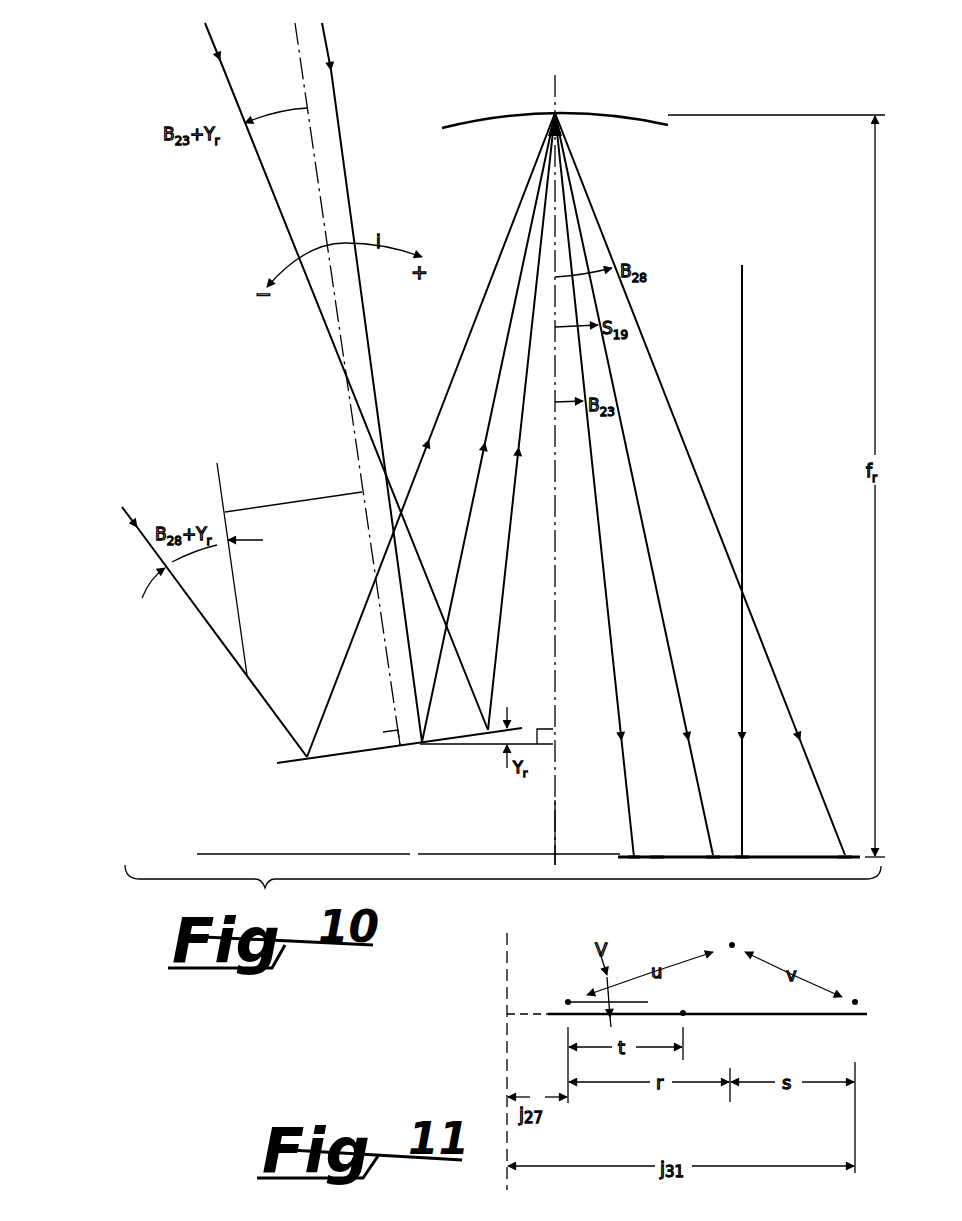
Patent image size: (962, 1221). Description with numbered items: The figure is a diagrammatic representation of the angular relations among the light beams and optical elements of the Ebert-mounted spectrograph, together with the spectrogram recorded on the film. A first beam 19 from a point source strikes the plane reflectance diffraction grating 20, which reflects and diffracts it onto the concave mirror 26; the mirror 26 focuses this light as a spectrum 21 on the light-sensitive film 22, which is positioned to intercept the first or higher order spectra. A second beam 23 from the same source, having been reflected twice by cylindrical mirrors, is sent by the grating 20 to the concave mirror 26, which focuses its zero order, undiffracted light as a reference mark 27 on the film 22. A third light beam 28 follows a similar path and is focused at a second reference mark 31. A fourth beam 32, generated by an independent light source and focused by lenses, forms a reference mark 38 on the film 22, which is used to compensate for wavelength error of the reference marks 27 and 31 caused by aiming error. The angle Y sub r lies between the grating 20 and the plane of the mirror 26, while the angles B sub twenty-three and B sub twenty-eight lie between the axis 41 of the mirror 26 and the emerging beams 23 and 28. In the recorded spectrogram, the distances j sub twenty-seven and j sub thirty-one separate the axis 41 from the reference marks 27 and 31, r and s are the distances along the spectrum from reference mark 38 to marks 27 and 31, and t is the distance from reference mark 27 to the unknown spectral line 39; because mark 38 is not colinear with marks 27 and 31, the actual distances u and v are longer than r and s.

In FIG. 10, the first beam 19 is at (330, 52).
In FIG. 10, the plane reflectance diffraction grating 20 is at (348, 754).
In FIG. 11, the spectrum 21 is at (758, 1018).
In FIG. 10, the light-sensitive film 22 is at (657, 853).
In FIG. 10, the second beam 23 is at (212, 42).
In FIG. 10, the concave mirror 26 is at (597, 113).
In FIG. 10, the reference mark 27 is at (632, 853).
In FIG. 11, the reference mark 27 is at (567, 1001).
In FIG. 10, the third light beam 28 is at (130, 517).
In FIG. 10, the second reference mark 31 is at (843, 853).
In FIG. 11, the second reference mark 31 is at (855, 1001).
In FIG. 10, the fourth beam 32 is at (742, 693).
In FIG. 10, the reference mark 38 is at (757, 853).
In FIG. 11, the reference mark 38 is at (735, 945).
In FIG. 10, the unknown spectral line 39 is at (712, 853).
In FIG. 11, the unknown spectral line 39 is at (683, 1015).
In FIG. 10, the axis 41 is at (552, 840).
In FIG. 11, the axis 41 is at (507, 1013).